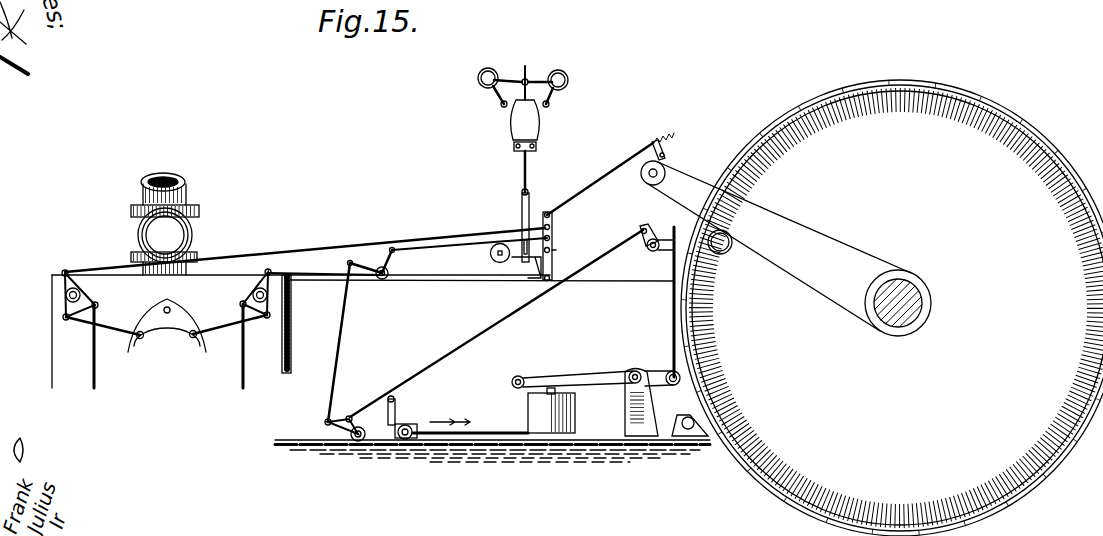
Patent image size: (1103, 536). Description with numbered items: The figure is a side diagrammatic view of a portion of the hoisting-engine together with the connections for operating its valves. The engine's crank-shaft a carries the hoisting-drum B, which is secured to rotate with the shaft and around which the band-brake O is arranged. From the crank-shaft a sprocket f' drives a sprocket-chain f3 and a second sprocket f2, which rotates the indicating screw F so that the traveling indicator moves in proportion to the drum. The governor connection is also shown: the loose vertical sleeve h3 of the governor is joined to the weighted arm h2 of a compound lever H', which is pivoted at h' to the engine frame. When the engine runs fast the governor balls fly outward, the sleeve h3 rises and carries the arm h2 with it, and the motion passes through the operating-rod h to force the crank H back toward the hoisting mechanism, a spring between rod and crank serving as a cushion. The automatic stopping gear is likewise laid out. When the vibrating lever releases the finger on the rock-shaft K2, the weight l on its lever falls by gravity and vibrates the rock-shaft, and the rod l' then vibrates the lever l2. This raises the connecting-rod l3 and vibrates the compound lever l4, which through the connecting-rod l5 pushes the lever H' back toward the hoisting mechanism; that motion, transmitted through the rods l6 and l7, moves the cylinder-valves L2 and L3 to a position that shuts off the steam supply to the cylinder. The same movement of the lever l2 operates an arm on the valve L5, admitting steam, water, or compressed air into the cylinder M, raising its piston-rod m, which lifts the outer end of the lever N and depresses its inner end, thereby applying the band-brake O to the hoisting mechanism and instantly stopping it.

The cylinder-valve L3 is at (60, 297).
The cylinder-valve L2 is at (250, 298).
The rod l7 is at (310, 250).
The rod l6 is at (332, 277).
The connecting-rod l5 is at (457, 249).
The compound lever l4 is at (390, 278).
The connecting-rod l3 is at (342, 350).
The lever l2 is at (339, 422).
The rod l' is at (496, 323).
The valve L5 is at (409, 426).
The sleeve h3 is at (521, 172).
The weighted arm h2 is at (503, 245).
The operating-rod h is at (600, 179).
The crank H is at (675, 146).
The compound lever H' is at (563, 246).
The pivot h' is at (564, 256).
The screw F is at (641, 178).
The sprocket f2 is at (666, 180).
The sprocket-chain f3 is at (830, 238).
The sprocket f' is at (898, 284).
The crank-shaft a is at (928, 292).
The weight l is at (720, 261).
The rock-shaft K2 is at (653, 252).
The band-brake O is at (778, 114).
The hoisting-drum B is at (900, 308).
The piston-rod m is at (550, 386).
The cylinder M is at (551, 413).
The lever N is at (598, 370).